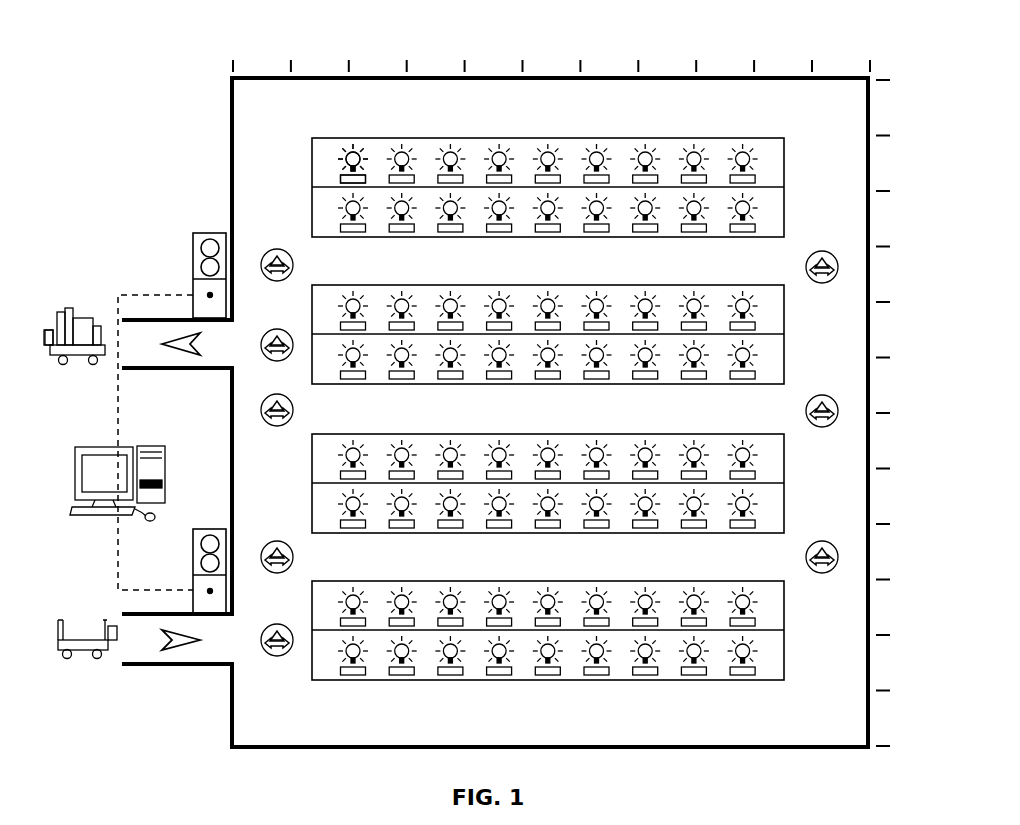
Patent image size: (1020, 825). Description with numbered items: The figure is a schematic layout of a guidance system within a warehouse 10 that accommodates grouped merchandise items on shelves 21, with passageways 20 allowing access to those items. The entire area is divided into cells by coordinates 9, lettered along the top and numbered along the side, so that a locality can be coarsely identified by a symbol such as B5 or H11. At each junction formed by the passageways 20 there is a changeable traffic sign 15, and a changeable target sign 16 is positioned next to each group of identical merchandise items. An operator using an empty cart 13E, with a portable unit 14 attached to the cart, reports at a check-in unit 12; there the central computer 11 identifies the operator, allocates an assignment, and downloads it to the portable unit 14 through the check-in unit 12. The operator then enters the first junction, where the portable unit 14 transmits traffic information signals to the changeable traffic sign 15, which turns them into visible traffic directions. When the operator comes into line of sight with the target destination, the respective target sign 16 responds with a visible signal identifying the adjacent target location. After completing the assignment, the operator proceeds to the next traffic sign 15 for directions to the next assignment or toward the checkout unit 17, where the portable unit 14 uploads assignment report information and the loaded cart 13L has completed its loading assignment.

The coordinates 9 is at (880, 56).
The warehouse 10 is at (172, 56).
The central computer 11 is at (124, 445).
The check-in unit 12 is at (220, 528).
The loaded cart 13L is at (88, 290).
The empty cart 13E is at (91, 680).
The portable unit 14 is at (47, 345).
The changeable traffic sign 15 is at (273, 246).
The changeable target sign 16 is at (355, 146).
The checkout unit 17 is at (210, 232).
The passageways 20 is at (579, 382).
The shelves 21 is at (786, 181).